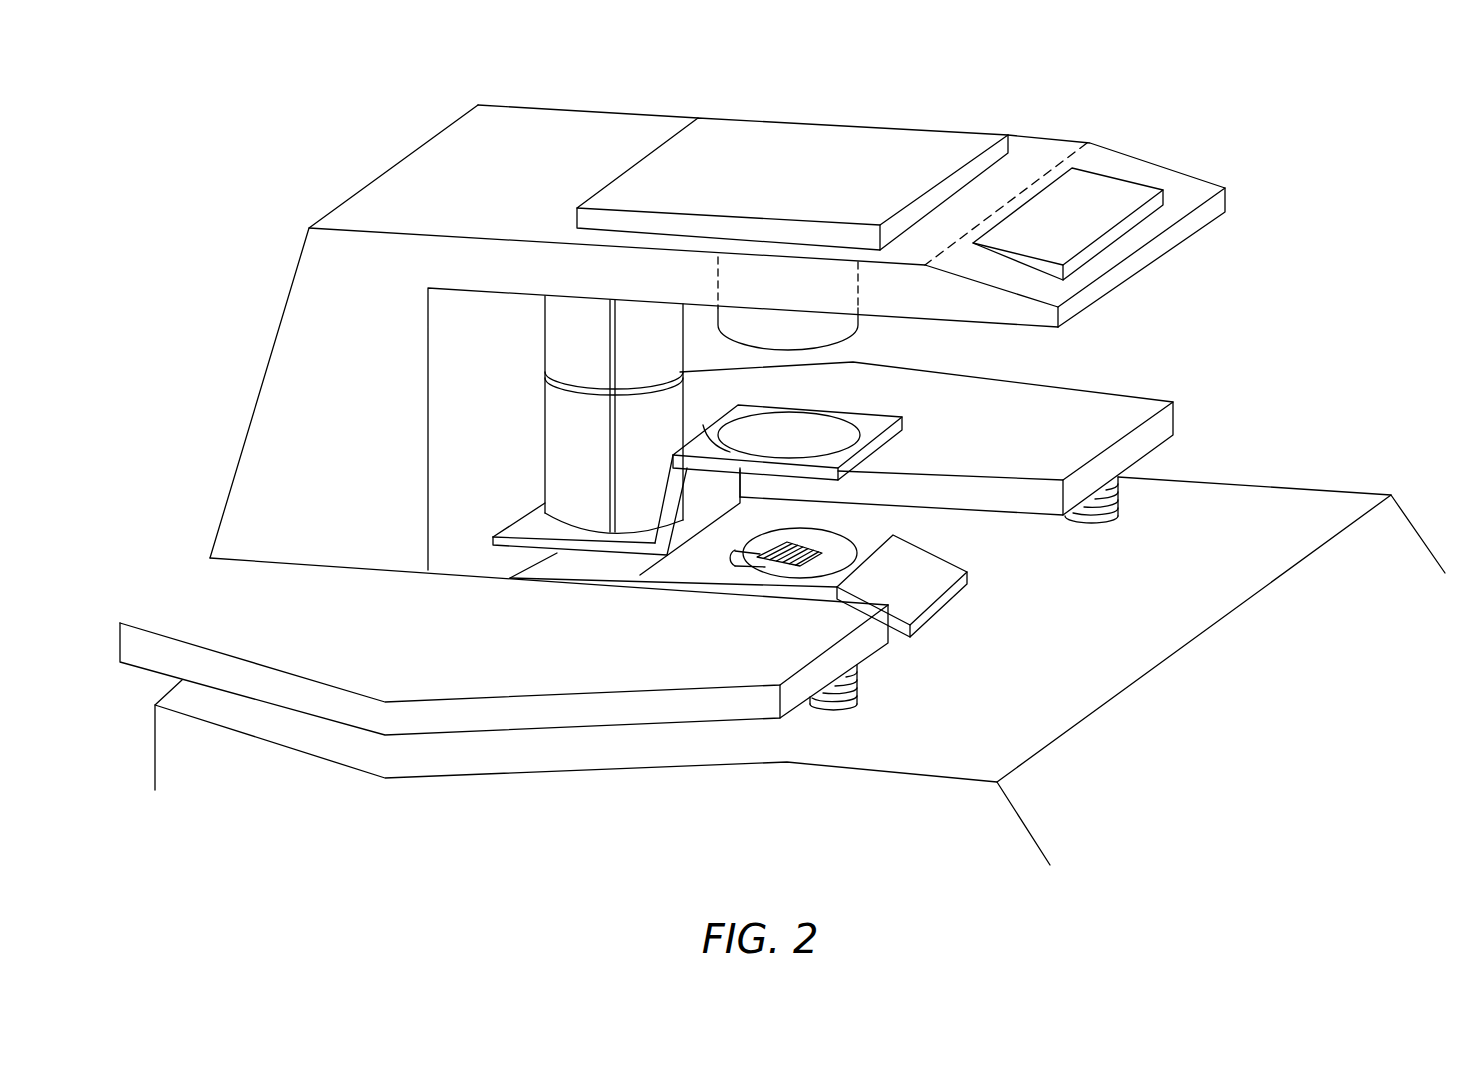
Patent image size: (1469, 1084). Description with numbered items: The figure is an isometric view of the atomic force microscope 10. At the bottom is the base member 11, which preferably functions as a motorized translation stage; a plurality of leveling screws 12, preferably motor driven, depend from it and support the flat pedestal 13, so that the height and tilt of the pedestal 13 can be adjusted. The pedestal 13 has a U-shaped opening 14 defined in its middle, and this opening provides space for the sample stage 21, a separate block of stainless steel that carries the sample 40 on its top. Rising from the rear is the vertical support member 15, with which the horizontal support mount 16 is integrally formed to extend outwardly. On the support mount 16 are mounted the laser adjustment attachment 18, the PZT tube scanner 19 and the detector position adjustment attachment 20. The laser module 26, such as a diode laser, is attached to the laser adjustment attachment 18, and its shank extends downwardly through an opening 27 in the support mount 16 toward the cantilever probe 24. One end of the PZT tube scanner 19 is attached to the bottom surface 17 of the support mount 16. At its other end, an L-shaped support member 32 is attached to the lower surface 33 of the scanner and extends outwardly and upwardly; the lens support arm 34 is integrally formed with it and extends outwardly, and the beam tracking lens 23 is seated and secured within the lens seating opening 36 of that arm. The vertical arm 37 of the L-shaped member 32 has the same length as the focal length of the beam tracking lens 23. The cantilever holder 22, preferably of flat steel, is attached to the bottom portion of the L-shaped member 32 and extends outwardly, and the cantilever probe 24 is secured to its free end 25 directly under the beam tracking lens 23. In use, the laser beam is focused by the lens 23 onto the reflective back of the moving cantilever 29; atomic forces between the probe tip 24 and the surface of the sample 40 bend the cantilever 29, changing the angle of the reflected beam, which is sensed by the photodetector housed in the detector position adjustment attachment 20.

The atomic force microscope 10 is at (1398, 267).
The base member 11 is at (1126, 707).
The leveling screws 12 is at (1117, 505).
The flat pedestal 13 is at (867, 648).
The U-shaped opening 14 is at (1036, 568).
The vertical support member 15 is at (248, 432).
The horizontal support mount 16 is at (1043, 318).
The bottom surface 17 is at (1010, 330).
The laser adjustment attachment 18 is at (953, 138).
The PZT tube scanner 19 is at (545, 343).
The detector position adjustment attachment 20 is at (1160, 200).
The sample stage 21 is at (945, 603).
The cantilever holder 22 is at (640, 576).
The beam tracking lens 23 is at (826, 418).
The cantilever probe 24 is at (763, 532).
The free end 25 is at (720, 552).
The laser module 26 is at (860, 318).
The opening 27 is at (740, 293).
The moving cantilever 29 is at (773, 547).
The L-shaped support member 32 is at (717, 495).
The lower surface 33 is at (545, 513).
The lens support arm 34 is at (902, 428).
The lens seating opening 36 is at (703, 425).
The vertical arm 37 is at (673, 488).
The sample 40 is at (803, 562).